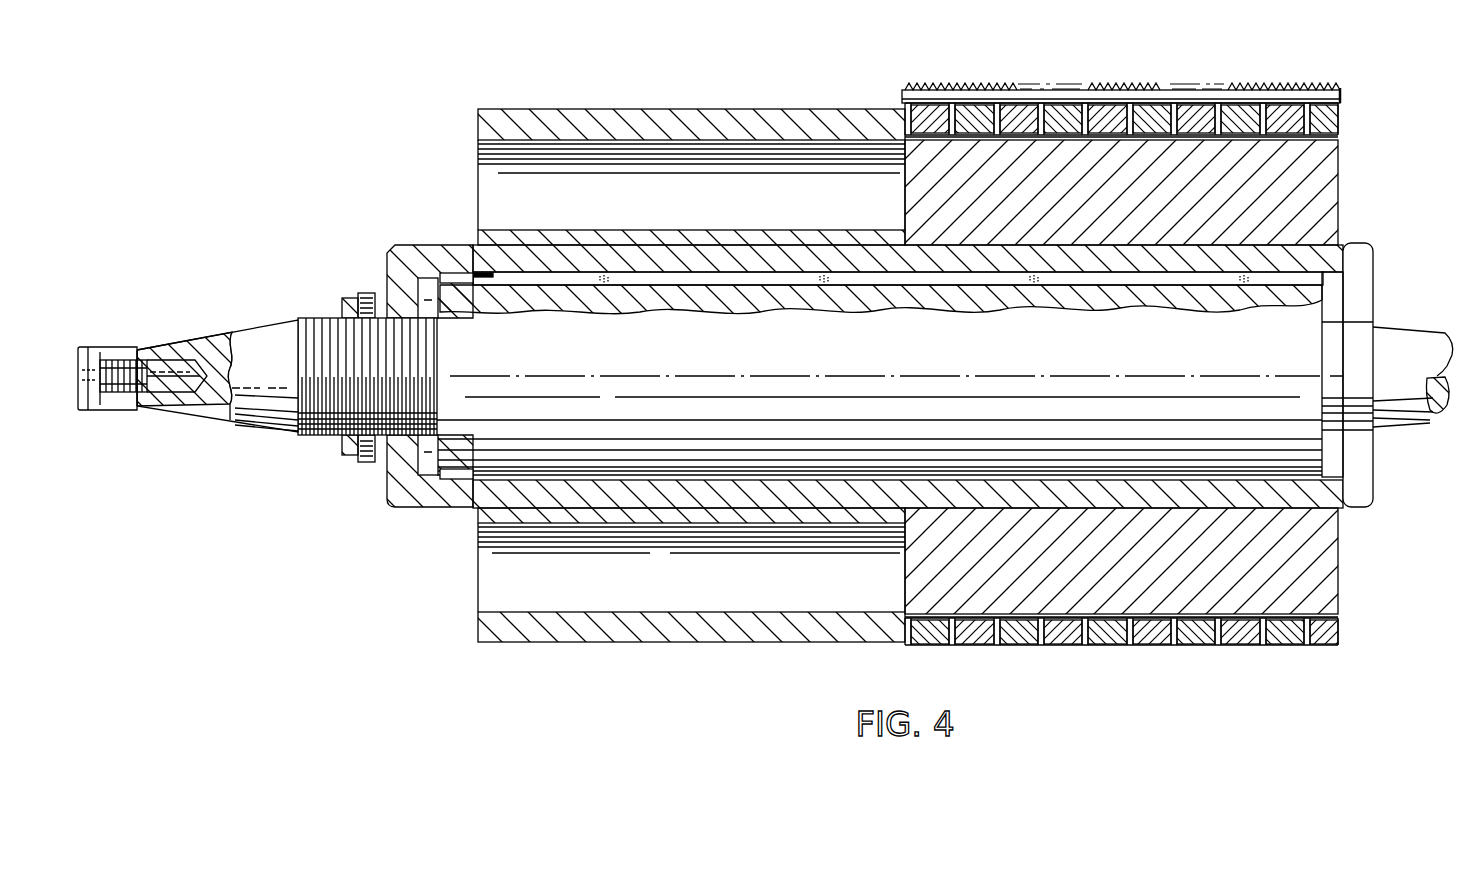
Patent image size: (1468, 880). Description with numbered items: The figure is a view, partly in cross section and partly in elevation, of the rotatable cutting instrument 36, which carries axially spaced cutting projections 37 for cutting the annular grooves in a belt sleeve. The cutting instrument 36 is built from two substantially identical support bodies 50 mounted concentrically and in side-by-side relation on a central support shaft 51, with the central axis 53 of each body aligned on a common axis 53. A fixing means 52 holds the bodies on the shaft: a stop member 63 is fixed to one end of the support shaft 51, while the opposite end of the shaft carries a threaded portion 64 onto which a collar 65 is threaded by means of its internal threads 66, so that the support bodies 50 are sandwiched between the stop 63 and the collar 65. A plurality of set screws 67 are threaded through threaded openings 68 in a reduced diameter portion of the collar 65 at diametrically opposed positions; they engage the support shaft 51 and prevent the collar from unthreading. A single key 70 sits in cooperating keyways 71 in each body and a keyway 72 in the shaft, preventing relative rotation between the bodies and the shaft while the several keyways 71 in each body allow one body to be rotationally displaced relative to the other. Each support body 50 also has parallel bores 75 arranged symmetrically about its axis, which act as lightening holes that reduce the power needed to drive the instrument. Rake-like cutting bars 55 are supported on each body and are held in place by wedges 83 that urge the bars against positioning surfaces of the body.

The rotatable cutting instrument 36 is at (1272, 61).
The cutting projections 37 is at (958, 82).
The support bodies 50 is at (549, 110).
The central support shaft 51 is at (272, 333).
The fixing means 52 is at (330, 457).
The central axis 53 is at (648, 375).
The rake-like cutting bars 55 is at (1346, 92).
The stop member 63 is at (1367, 287).
The threaded portion 64 is at (330, 412).
The collar 65 is at (421, 507).
The internal threads 66 is at (400, 325).
The set screws 67 is at (368, 300).
The threaded openings 68 is at (345, 305).
The key 70 is at (960, 277).
The keyways 71 is at (622, 273).
The keyway 72 is at (690, 285).
The bores 75 is at (510, 143).
The wedges 83 is at (1338, 119).